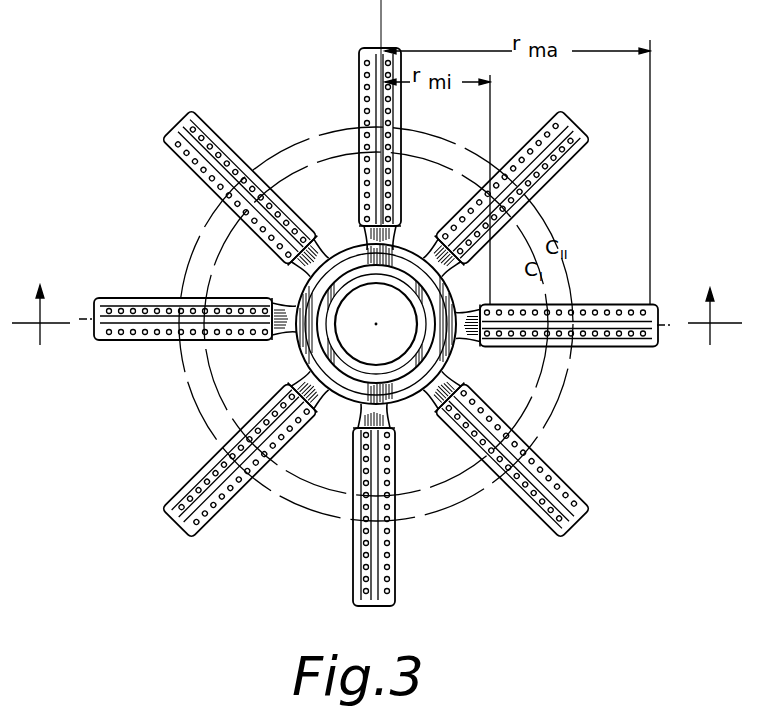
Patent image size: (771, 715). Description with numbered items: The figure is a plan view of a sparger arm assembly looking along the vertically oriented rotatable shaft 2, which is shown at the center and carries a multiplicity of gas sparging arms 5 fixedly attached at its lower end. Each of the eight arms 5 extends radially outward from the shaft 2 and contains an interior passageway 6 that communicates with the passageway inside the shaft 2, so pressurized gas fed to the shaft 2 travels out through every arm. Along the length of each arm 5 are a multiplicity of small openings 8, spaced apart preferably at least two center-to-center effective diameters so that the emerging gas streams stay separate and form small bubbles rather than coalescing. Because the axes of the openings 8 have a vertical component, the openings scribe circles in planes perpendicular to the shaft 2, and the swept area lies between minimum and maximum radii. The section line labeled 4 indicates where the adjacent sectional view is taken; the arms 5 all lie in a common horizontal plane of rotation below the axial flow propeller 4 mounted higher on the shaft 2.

The rotatable shaft 2 is at (418, 343).
The propeller 4 is at (377, 325).
The gas sparging arms 5 is at (617, 347).
The interior passageway 6 is at (367, 343).
The openings 8 is at (383, 562).